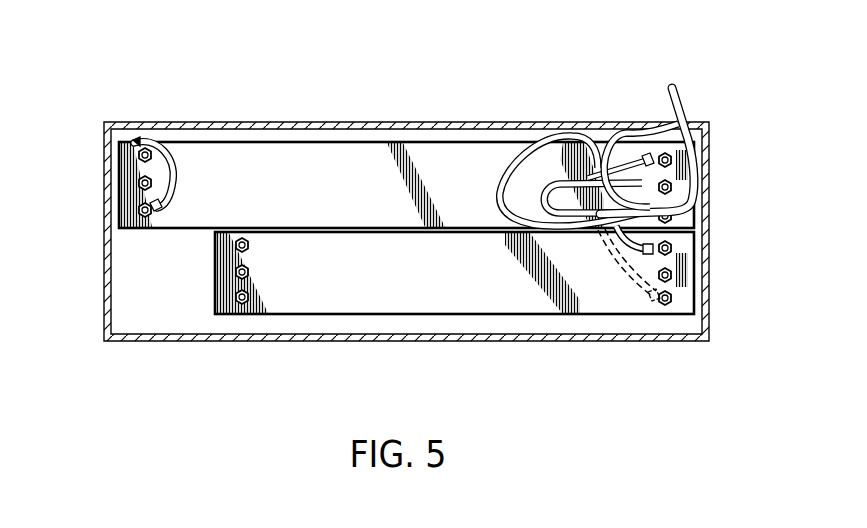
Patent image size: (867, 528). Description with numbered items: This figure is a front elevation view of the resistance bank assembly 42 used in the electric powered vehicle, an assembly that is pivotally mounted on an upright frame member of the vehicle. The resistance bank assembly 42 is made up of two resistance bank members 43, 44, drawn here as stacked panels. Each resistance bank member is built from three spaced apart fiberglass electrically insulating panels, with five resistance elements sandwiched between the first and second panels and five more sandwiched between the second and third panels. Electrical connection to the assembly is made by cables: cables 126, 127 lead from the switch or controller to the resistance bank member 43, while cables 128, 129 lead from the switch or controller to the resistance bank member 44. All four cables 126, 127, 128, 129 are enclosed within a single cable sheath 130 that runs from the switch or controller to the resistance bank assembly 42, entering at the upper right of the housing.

The resistance bank assembly 42 is at (494, 121).
The resistance bank member 43 is at (137, 168).
The resistance bank member 44 is at (297, 263).
The cable 126 is at (700, 176).
The cable 127 is at (559, 133).
The cable 128 is at (620, 284).
The cable 129 is at (700, 221).
The cable sheath 130 is at (673, 100).